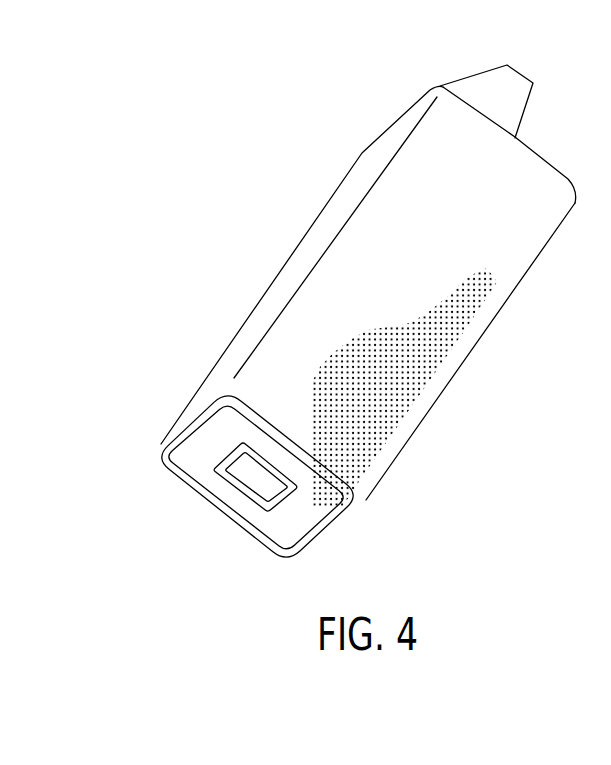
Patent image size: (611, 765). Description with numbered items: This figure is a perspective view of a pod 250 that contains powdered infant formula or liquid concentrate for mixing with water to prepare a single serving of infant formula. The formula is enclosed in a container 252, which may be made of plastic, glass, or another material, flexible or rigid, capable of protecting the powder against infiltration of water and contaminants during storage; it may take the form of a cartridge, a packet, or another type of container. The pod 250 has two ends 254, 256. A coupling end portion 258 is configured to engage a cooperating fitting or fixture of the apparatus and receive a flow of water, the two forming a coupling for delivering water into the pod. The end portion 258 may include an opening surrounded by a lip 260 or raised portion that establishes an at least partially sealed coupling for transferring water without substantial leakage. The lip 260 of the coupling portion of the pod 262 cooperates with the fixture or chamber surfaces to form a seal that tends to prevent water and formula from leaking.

The pod 250 is at (525, 457).
The container 252 is at (533, 233).
The end 254 is at (558, 150).
The end 256 is at (277, 540).
The coupling end portion 258 is at (243, 492).
The lip 260 is at (227, 460).
The coupling portion of the pod 262 is at (520, 74).